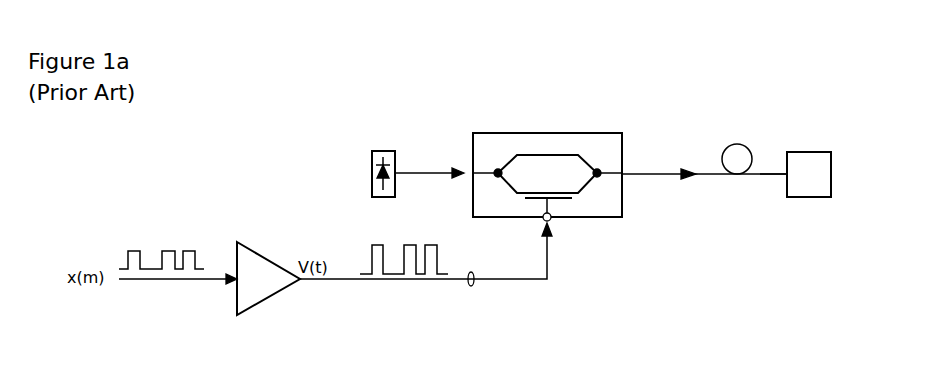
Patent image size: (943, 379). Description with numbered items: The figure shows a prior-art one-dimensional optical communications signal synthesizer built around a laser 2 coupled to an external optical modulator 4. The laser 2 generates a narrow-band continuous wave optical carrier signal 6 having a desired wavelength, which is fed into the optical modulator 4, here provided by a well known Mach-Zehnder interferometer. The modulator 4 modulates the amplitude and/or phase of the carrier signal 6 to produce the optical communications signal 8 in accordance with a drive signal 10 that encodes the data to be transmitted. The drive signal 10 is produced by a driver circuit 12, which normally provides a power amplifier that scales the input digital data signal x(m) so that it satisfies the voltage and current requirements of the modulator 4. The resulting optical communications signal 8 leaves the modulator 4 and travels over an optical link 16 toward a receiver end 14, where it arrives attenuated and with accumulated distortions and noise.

The laser 2 is at (385, 151).
The optical modulator 4 is at (600, 133).
The optical carrier signal 6 is at (420, 173).
The optical communications signal 8 is at (660, 173).
The drive signal 10 is at (472, 272).
The driver circuit 12 is at (263, 258).
The receiver end 14 is at (806, 152).
The optical link 16 is at (766, 176).